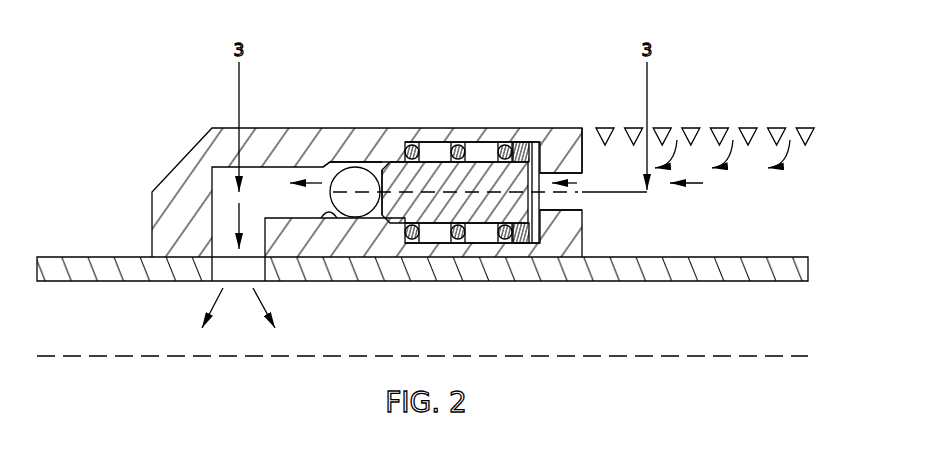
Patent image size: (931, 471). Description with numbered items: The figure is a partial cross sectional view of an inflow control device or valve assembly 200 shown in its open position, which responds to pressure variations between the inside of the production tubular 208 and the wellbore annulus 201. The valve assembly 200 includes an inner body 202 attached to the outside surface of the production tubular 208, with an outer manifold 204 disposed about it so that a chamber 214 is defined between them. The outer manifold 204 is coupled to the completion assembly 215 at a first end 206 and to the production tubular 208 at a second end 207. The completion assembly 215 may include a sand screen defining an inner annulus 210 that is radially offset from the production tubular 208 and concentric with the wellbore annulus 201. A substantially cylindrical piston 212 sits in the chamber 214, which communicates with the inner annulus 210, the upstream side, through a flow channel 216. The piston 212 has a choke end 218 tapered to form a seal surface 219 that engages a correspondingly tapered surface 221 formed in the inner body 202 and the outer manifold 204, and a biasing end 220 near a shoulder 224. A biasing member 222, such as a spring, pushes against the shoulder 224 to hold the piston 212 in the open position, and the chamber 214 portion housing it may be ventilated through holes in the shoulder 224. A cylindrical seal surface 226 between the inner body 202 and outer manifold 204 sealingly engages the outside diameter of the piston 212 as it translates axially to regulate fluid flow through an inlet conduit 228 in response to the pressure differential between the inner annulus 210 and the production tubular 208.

The valve assembly 200 is at (549, 26).
The wellbore annulus 201 is at (800, 92).
The inner body 202 is at (404, 250).
The outer manifold 204 is at (262, 145).
The first end 206 is at (583, 148).
The second end 207 is at (157, 255).
The production tubular 208 is at (713, 270).
The inner annulus 210 is at (753, 208).
The piston 212 is at (462, 213).
The chamber 214 is at (438, 152).
The completion assembly 215 is at (718, 129).
The flow channel 216 is at (565, 203).
The choke end 218 is at (353, 220).
The seal surface 219 is at (381, 165).
The biasing end 220 is at (537, 210).
The tapered surface 221 is at (328, 218).
The biasing member 222 is at (512, 235).
The shoulder 224 is at (519, 143).
The seal surface 226 is at (330, 160).
The inlet conduit 228 is at (335, 203).